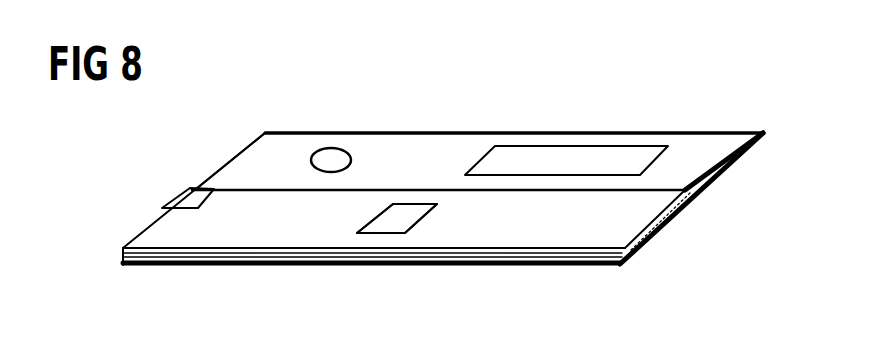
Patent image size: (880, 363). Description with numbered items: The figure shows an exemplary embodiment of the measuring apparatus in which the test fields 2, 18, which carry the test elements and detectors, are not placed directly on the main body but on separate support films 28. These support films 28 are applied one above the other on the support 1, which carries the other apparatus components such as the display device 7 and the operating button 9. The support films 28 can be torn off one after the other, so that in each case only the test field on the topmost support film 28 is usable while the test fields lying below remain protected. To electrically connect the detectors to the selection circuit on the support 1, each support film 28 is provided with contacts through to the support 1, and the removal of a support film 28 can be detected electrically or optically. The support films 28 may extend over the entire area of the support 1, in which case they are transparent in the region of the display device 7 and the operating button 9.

The support 1 is at (260, 163).
The test field 2 is at (378, 222).
The display device 7 is at (560, 160).
The operating button 9 is at (332, 158).
The test field 18 is at (378, 222).
The support film 28 is at (163, 233).